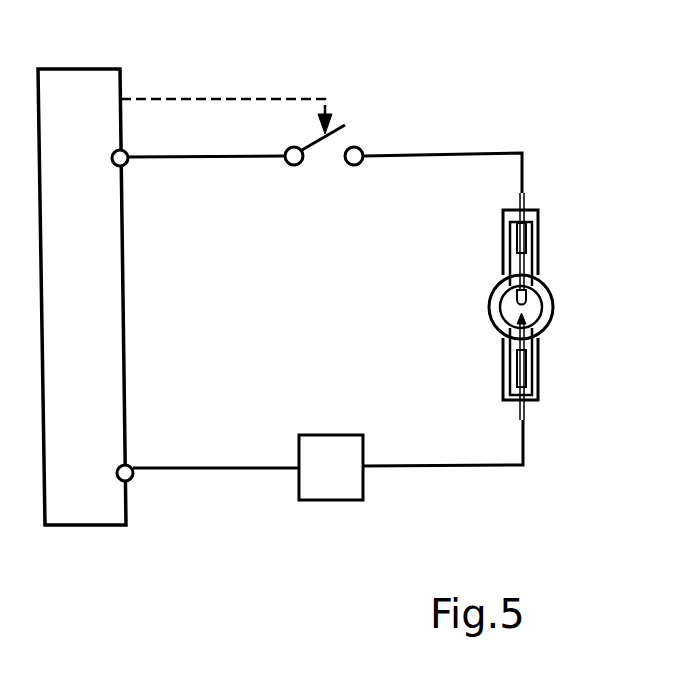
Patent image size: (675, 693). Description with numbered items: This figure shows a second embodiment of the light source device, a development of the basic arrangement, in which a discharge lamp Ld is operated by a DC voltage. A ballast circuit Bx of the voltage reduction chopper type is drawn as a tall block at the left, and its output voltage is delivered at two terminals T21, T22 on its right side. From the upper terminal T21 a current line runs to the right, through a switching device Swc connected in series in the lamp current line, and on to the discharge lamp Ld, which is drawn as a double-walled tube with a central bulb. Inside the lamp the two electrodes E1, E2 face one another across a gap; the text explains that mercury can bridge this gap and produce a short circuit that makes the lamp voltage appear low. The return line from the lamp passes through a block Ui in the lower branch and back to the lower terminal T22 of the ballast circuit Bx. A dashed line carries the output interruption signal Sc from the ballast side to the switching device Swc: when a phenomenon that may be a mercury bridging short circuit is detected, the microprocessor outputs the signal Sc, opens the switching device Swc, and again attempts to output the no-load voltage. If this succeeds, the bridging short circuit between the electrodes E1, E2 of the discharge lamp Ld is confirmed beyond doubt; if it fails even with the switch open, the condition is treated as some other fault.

The ballast circuit Bx is at (87, 526).
The terminal T21 is at (128, 164).
The terminal T22 is at (131, 480).
The switching device Swc is at (341, 125).
The output interruption signal Sc is at (243, 97).
The discharge lamp Ld is at (556, 307).
The electrode E1 is at (532, 323).
The electrode E2 is at (541, 292).
The current detection unit Ui is at (332, 501).